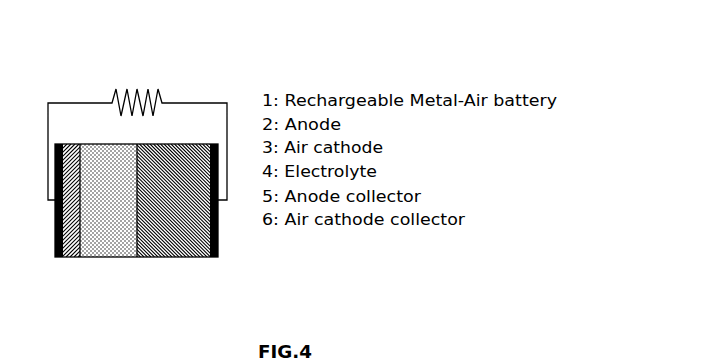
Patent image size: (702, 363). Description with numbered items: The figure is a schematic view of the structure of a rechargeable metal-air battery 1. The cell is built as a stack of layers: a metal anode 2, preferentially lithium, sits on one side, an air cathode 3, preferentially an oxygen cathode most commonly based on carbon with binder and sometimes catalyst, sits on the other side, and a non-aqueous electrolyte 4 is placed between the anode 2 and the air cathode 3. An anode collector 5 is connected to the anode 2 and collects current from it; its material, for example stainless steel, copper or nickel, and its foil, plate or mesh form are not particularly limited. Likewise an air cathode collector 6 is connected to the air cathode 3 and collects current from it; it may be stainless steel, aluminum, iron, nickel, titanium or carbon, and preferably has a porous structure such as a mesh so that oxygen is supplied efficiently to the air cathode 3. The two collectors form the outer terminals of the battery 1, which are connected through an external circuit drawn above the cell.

The rechargeable metal-air battery 1 is at (203, 53).
The anode 2 is at (176, 250).
The air cathode 3 is at (73, 252).
The electrolyte 4 is at (111, 250).
The anode collector 5 is at (217, 257).
The air cathode collector 6 is at (60, 257).